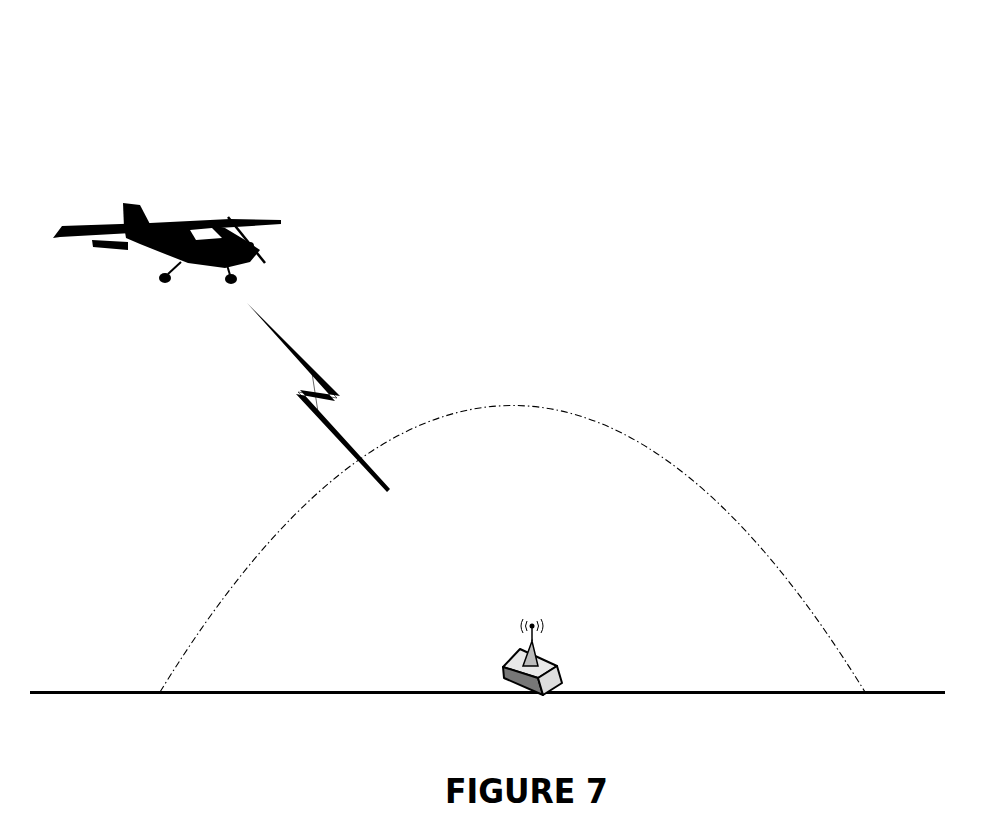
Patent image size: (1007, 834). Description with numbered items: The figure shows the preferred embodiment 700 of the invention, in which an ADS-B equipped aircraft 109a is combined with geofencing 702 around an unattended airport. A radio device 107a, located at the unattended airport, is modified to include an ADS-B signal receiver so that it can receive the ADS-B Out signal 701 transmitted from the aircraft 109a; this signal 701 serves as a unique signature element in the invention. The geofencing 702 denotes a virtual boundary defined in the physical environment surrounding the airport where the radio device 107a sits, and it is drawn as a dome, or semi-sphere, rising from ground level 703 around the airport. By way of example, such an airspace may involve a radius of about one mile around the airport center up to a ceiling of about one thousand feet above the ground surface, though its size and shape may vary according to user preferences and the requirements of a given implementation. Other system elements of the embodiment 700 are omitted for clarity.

The preferred embodiment 700 is at (525, 108).
The ADS-B equipped aircraft 109a is at (193, 223).
The ADS-B Out signal 701 is at (302, 358).
The geofencing 702 is at (568, 422).
The ground level 703 is at (705, 692).
The radio device 107a is at (500, 658).